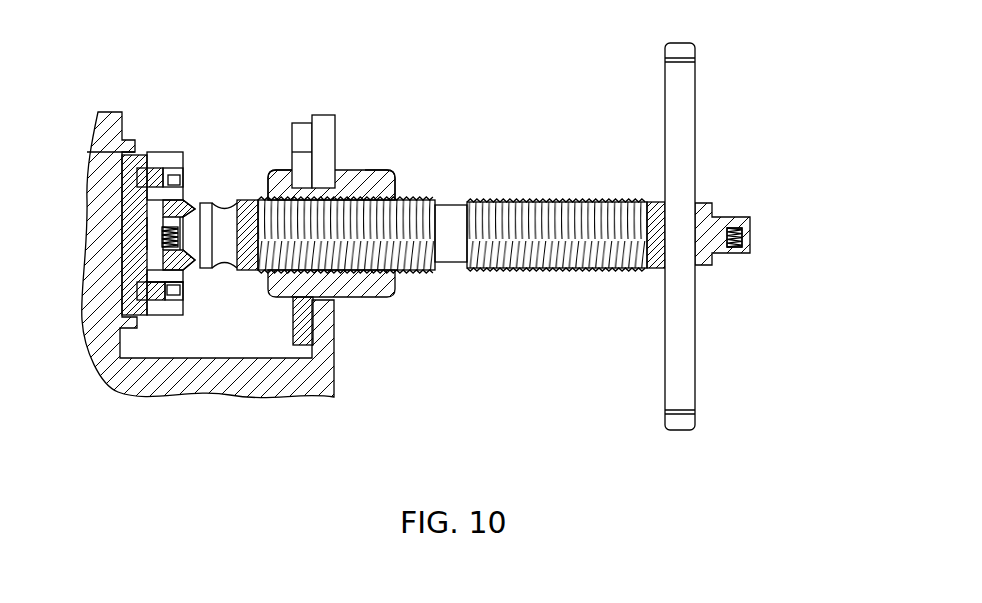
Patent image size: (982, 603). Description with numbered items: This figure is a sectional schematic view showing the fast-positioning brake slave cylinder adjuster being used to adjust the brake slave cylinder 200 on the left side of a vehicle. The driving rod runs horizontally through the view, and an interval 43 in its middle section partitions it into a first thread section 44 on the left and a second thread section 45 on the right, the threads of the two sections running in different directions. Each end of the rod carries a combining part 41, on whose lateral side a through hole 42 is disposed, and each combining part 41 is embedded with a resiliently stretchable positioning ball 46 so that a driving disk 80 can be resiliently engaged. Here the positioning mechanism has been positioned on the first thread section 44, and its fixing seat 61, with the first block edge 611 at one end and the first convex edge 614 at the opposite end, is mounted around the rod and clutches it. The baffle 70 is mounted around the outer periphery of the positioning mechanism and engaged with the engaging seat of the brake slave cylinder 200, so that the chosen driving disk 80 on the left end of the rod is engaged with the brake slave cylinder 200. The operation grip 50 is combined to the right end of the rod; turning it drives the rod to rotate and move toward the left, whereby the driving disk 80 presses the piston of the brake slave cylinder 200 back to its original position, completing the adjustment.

The brake slave cylinder 200 is at (107, 101).
The driving disk 80 is at (175, 123).
The baffle 70 is at (303, 108).
The first block edge 611 is at (282, 170).
The fixing seat 61 is at (355, 188).
The first convex edge 614 is at (382, 172).
The combining part 41 is at (190, 205).
The operation grip 50 is at (685, 95).
The positioning ball 46 is at (732, 250).
The first thread section 44 is at (410, 275).
The interval 43 is at (457, 270).
The second thread section 45 is at (527, 270).
The through hole 42 is at (229, 243).